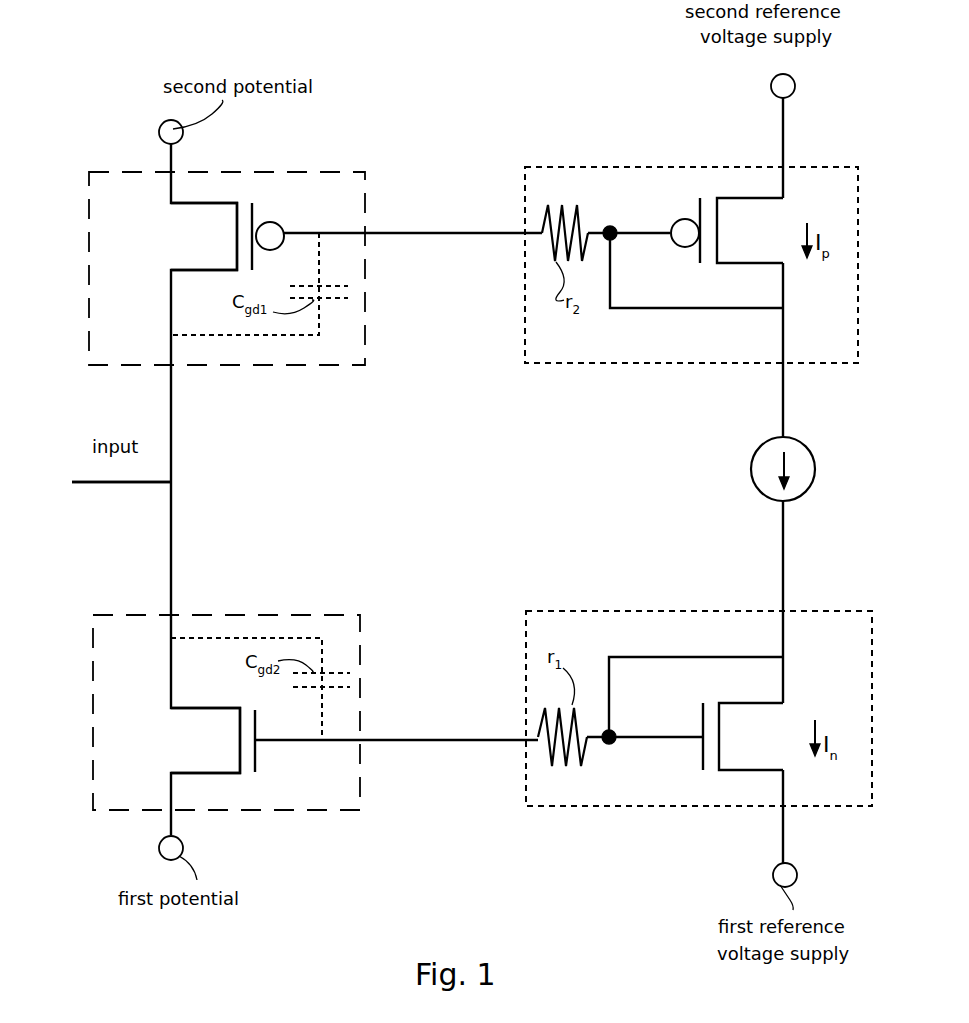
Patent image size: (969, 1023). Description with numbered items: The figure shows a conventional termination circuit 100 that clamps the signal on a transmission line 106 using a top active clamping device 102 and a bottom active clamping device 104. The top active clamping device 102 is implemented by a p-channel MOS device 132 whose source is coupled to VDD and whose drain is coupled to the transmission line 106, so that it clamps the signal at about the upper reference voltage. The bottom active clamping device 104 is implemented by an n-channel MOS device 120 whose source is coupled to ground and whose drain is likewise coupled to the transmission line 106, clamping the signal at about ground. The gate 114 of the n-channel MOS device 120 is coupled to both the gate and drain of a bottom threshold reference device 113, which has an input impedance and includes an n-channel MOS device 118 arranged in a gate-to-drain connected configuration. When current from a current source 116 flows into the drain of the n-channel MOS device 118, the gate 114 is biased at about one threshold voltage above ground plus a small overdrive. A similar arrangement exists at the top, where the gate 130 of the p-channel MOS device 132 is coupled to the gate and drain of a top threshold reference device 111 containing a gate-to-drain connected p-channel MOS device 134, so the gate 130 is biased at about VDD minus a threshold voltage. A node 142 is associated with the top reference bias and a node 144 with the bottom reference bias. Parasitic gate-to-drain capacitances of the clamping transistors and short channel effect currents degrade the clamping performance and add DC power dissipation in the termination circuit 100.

The termination circuit 100 is at (150, 928).
The top active clamping device 102 is at (128, 178).
The bottom active clamping device 104 is at (93, 618).
The transmission line 106 is at (113, 485).
The top threshold reference device 111 is at (848, 183).
The bottom threshold reference device 113 is at (855, 625).
The gate 114 is at (258, 752).
The current source 116 is at (752, 458).
The n-channel MOS device 118 is at (722, 730).
The n-channel MOS device 120 is at (238, 742).
The gate 130 is at (258, 198).
The p-channel MOS device 132 is at (237, 230).
The p-channel MOS device 134 is at (722, 225).
The node 142 is at (610, 226).
The node 144 is at (605, 746).